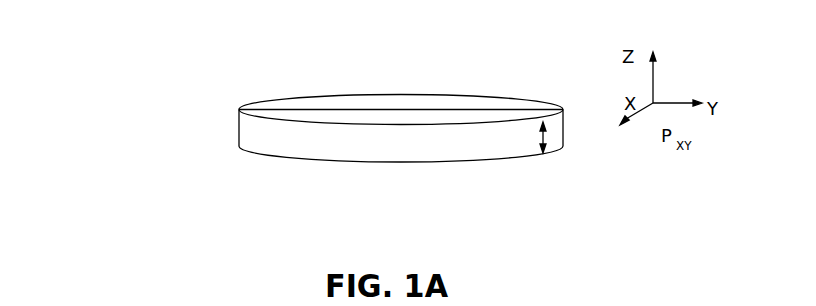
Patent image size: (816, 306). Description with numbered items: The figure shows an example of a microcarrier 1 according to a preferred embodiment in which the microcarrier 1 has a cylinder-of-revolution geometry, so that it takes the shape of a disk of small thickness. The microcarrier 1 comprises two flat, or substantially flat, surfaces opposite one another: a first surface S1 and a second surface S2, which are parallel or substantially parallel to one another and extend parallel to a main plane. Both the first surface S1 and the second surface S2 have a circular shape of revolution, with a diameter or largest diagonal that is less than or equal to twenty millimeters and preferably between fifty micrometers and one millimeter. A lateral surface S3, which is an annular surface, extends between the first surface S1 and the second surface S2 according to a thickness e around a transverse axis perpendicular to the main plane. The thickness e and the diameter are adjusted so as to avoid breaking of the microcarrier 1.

The microcarrier 1 is at (94, 69).
The first surface S1 is at (408, 91).
The second surface S2 is at (398, 172).
The lateral surface S3 is at (250, 140).
The thickness e is at (533, 137).